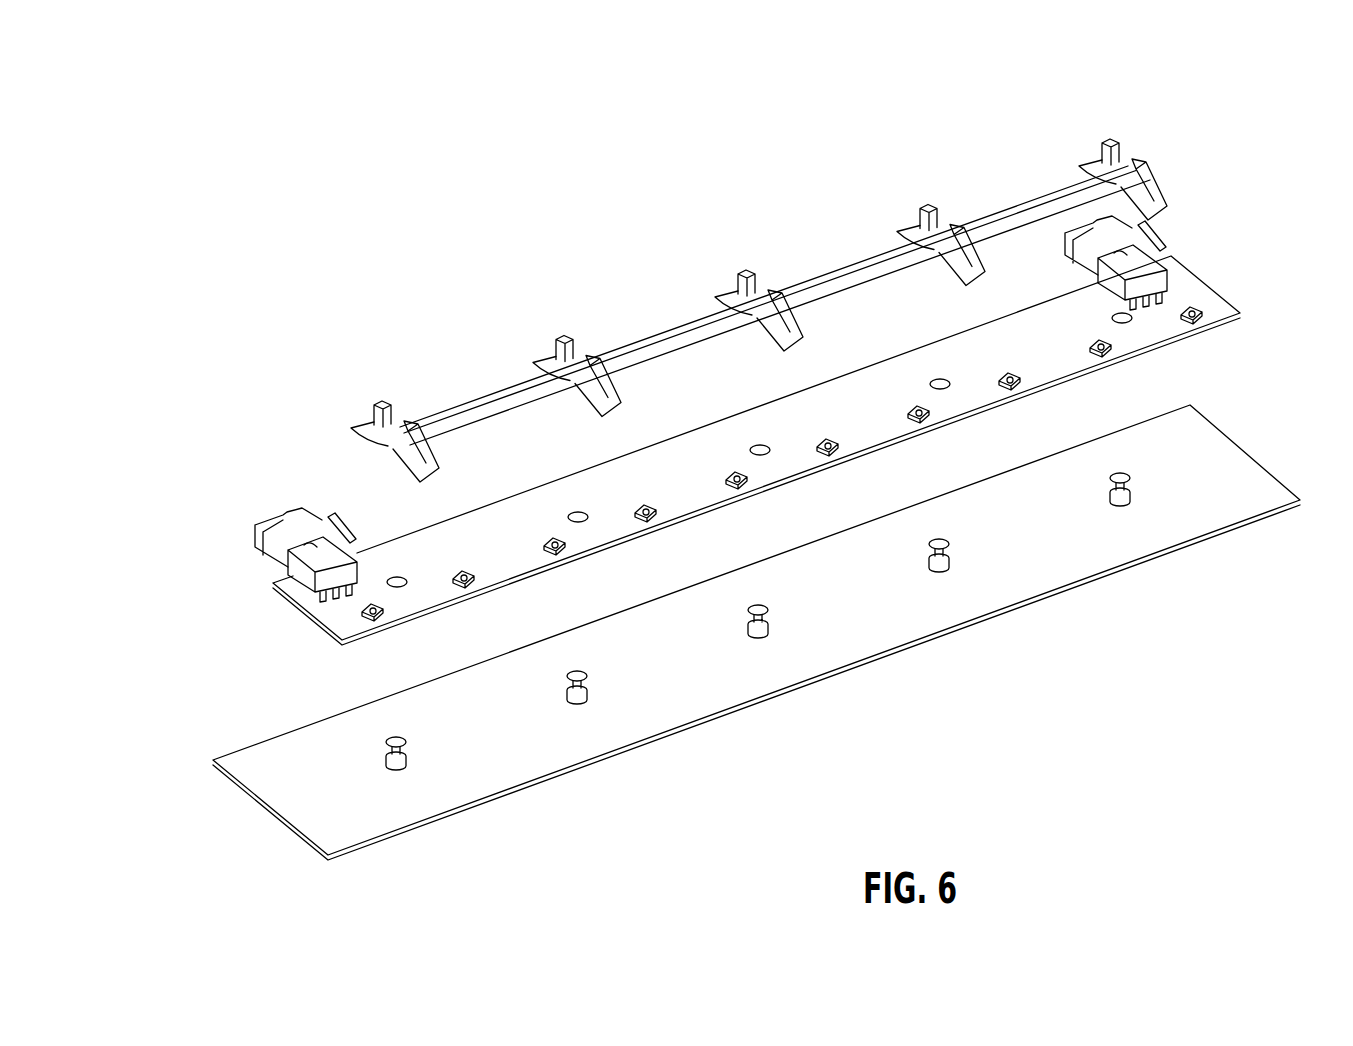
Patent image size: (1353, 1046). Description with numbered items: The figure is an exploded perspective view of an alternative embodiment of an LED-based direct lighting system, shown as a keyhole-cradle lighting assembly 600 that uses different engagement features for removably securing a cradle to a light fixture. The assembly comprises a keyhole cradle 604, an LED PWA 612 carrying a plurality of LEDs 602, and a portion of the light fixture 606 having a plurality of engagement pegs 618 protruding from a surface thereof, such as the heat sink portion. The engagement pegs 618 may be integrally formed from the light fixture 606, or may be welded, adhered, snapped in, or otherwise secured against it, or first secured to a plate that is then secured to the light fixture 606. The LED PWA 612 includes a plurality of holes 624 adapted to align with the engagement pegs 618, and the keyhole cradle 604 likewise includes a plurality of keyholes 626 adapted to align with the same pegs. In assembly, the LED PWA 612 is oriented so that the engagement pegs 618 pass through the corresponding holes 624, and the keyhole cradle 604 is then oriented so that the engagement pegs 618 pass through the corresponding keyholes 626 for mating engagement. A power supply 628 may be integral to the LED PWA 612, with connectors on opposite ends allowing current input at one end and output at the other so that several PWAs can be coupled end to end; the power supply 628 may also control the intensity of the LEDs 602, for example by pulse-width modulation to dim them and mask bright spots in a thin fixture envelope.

The keyhole-cradle lighting assembly 600 is at (701, 501).
The LEDs 602 is at (236, 592).
The keyhole cradle 604 is at (759, 299).
The light fixture 606 is at (756, 676).
The LED PWA 612 is at (701, 365).
The engagement pegs 618 is at (666, 757).
The holes 624 is at (999, 222).
The keyholes 626 is at (799, 234).
The power supply 628 is at (1189, 238).